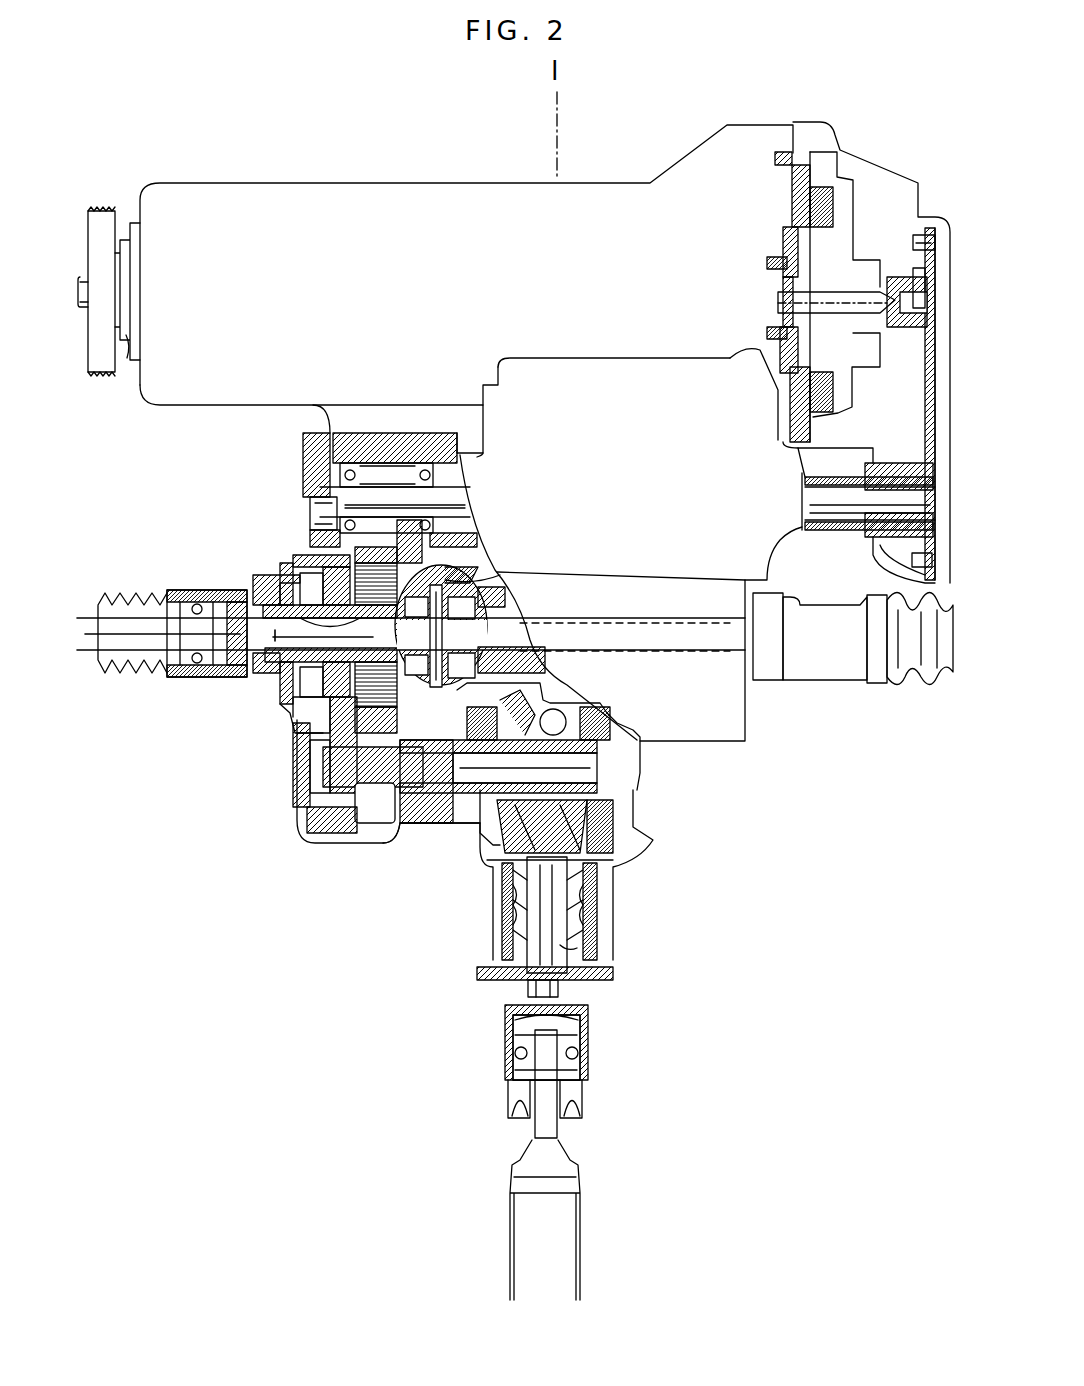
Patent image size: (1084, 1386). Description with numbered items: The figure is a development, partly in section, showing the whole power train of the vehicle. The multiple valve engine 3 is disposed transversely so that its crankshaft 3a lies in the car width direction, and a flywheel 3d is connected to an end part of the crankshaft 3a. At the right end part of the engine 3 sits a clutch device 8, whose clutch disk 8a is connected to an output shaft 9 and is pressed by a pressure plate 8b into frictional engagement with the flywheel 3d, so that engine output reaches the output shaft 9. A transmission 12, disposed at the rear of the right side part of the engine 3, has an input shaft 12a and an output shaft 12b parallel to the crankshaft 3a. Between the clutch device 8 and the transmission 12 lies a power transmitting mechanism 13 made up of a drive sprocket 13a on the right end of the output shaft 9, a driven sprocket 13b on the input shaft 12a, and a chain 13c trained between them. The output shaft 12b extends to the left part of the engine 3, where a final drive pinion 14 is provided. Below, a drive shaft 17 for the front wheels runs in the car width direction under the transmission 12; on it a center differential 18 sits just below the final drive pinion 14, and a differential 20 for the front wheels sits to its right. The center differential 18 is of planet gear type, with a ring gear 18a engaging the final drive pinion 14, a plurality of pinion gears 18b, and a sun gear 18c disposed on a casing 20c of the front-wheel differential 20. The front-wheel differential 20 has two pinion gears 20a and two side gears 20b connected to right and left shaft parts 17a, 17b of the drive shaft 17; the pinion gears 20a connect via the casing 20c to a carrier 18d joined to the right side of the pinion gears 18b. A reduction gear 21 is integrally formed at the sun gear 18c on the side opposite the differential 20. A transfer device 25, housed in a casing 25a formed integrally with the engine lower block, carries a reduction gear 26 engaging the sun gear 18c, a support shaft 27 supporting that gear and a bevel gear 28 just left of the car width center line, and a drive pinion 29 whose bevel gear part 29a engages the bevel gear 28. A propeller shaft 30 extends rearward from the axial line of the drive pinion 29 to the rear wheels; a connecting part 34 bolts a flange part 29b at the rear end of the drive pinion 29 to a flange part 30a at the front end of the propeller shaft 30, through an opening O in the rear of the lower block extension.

The multiple valve engine 3 is at (428, 165).
The crankshaft 3a is at (128, 345).
The flywheel 3d is at (785, 418).
The clutch device 8 is at (845, 170).
The clutch disk 8a is at (822, 415).
The pressure plate 8b is at (828, 225).
The output shaft 9 is at (828, 303).
The transmission 12 is at (645, 580).
The input shaft 12a is at (808, 500).
The output shaft 12b is at (458, 505).
The power transmitting mechanism 13 is at (940, 218).
The drive sprocket 13a is at (920, 235).
The driven sprocket 13b is at (892, 550).
The chain 13c is at (900, 365).
The final drive pinion 14 is at (385, 465).
The drive shaft 17 is at (662, 650).
The right shaft part 17a is at (823, 647).
The left shaft part 17b is at (258, 675).
The center differential 18 is at (415, 557).
The ring gear 18a is at (320, 505).
The pinion gears 18b is at (322, 545).
The sun gear 18c is at (280, 683).
The carrier 18d is at (525, 705).
The differential for the front wheels 20 is at (492, 583).
The pinion gears 20a is at (493, 578).
The side gears 20b is at (445, 632).
The casing 20c is at (262, 600).
The reduction gear 21 is at (300, 700).
The transfer device 25 is at (425, 830).
The casing 25a is at (385, 830).
The reduction gear 26 is at (305, 835).
The support shaft 27 is at (370, 760).
The bevel gear 28 is at (480, 843).
The drive pinion 29 is at (565, 905).
The bevel gear part 29a is at (612, 840).
The flange part 29b is at (613, 973).
The propeller shaft 30 is at (562, 1230).
The flange part 30a is at (600, 992).
The connecting part 34 is at (705, 962).
The opening O is at (578, 945).